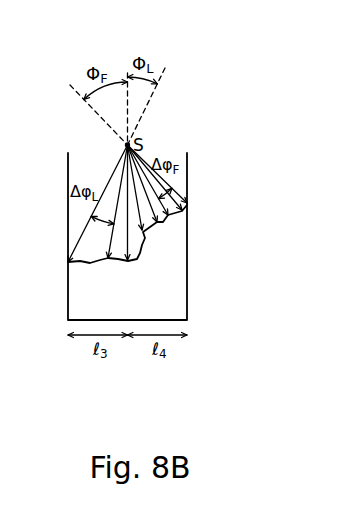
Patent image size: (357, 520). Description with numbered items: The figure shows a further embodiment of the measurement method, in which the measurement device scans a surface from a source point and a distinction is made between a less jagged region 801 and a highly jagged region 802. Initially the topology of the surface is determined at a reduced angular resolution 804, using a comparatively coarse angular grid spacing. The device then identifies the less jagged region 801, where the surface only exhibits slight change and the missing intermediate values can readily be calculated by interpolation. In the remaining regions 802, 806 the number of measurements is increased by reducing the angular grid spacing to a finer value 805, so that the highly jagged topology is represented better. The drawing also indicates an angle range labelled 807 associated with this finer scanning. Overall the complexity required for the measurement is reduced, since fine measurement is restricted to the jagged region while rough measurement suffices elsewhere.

The less jagged region 801 is at (100, 362).
The highly jagged region 802 is at (157, 362).
The reduced angular resolution 804 is at (83, 174).
The fine angular grid spacing 805 is at (170, 146).
The remaining region 806 is at (93, 58).
The lateral tilt angle 807 is at (150, 53).